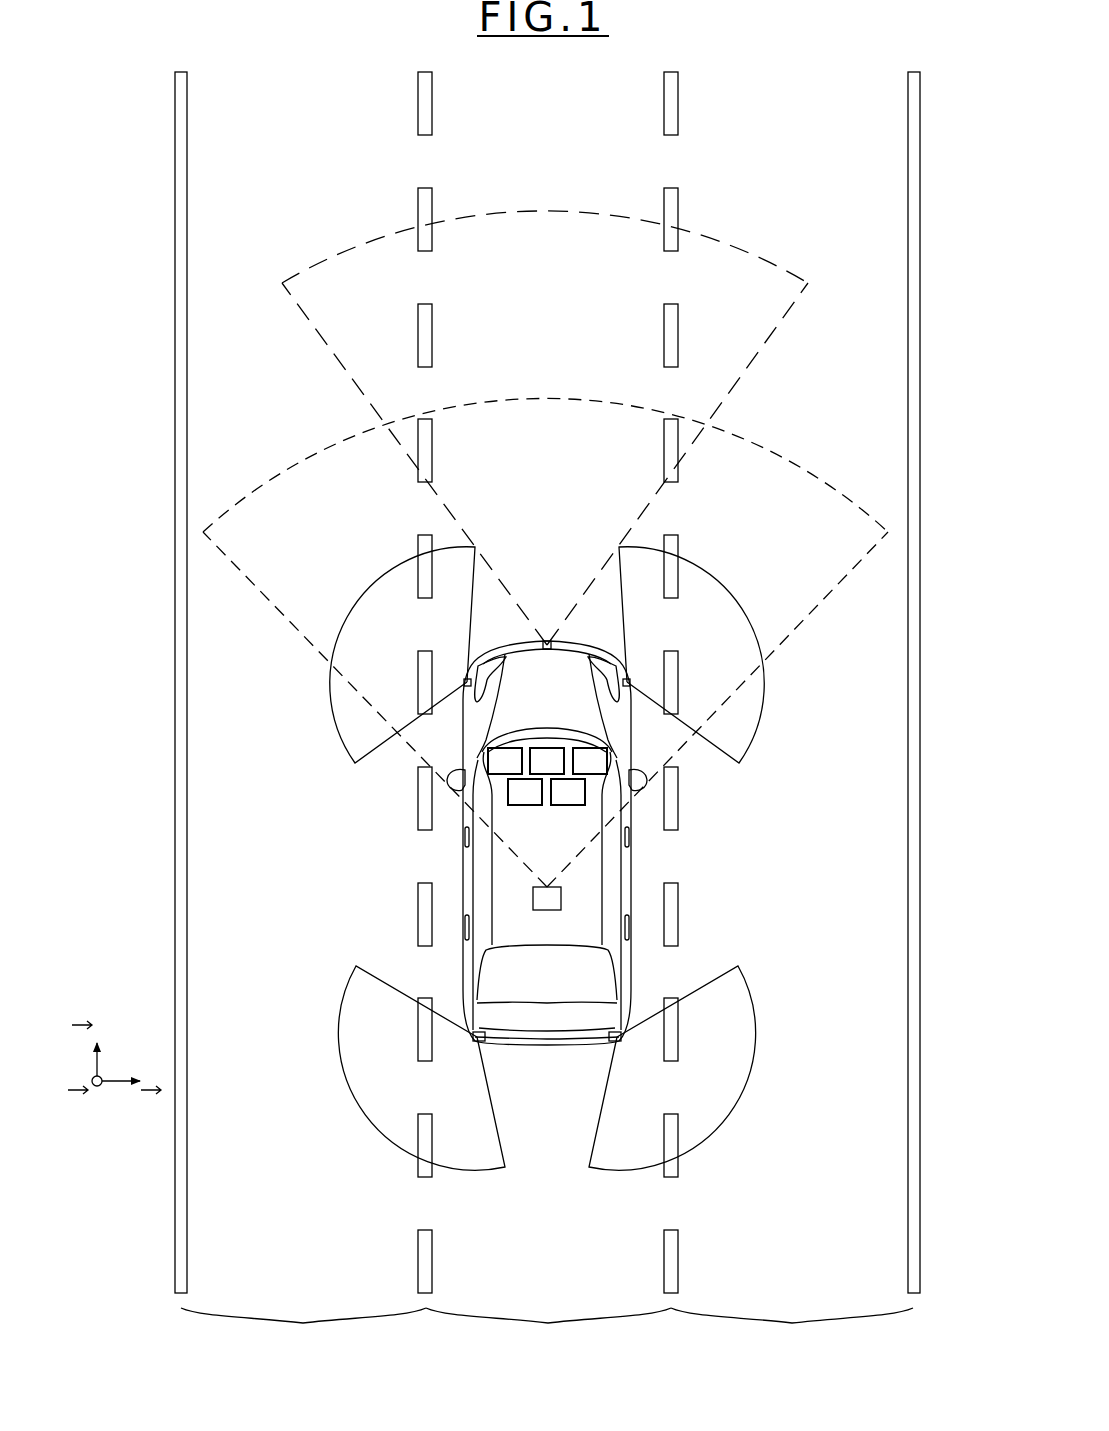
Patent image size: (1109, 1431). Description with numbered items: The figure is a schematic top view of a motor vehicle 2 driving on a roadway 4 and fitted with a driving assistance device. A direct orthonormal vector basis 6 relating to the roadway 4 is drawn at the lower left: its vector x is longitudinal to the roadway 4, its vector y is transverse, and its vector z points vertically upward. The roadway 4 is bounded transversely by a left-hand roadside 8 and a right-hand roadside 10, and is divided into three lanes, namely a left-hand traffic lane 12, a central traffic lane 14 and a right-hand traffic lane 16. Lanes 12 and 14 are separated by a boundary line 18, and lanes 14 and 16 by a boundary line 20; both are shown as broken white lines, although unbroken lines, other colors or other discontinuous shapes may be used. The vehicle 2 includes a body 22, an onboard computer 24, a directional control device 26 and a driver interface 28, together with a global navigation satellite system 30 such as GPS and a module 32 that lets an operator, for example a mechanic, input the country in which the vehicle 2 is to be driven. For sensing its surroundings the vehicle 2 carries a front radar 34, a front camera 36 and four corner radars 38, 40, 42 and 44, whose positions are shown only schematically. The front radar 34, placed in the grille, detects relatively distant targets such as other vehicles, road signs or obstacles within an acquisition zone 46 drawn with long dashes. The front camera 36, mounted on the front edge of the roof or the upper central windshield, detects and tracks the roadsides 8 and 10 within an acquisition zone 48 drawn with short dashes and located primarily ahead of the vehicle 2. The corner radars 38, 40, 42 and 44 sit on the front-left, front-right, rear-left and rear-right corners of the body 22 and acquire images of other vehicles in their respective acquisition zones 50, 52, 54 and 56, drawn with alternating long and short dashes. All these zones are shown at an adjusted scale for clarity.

The motor vehicle 2 is at (563, 826).
The roadway 4 is at (554, 682).
The direct orthonormal vector basis 6 is at (102, 1128).
The left-hand roadside 8 is at (174, 1243).
The right-hand roadside 10 is at (920, 1243).
The left-hand traffic lane 12 is at (303, 1329).
The central traffic lane 14 is at (548, 1329).
The right-hand traffic lane 16 is at (792, 1329).
The boundary line 18 is at (418, 1260).
The boundary line 20 is at (664, 1260).
The body 22 is at (471, 860).
The onboard computer 24 is at (590, 761).
The directional control device 26 is at (547, 761).
The driver interface 28 is at (505, 761).
The global navigation satellite system 30 is at (568, 792).
The module for inputting the country 32 is at (525, 792).
The front radar 34 is at (551, 645).
The front camera 36 is at (548, 897).
The corner radar 38 is at (466, 682).
The corner radar 40 is at (628, 682).
The corner radar 42 is at (477, 1037).
The corner radar 44 is at (617, 1037).
The acquisition zone 46 is at (547, 210).
The acquisition zone 48 is at (812, 471).
The acquisition zone 50 is at (322, 683).
The acquisition zone 52 is at (772, 683).
The acquisition zone 54 is at (361, 1112).
The acquisition zone 56 is at (733, 1112).